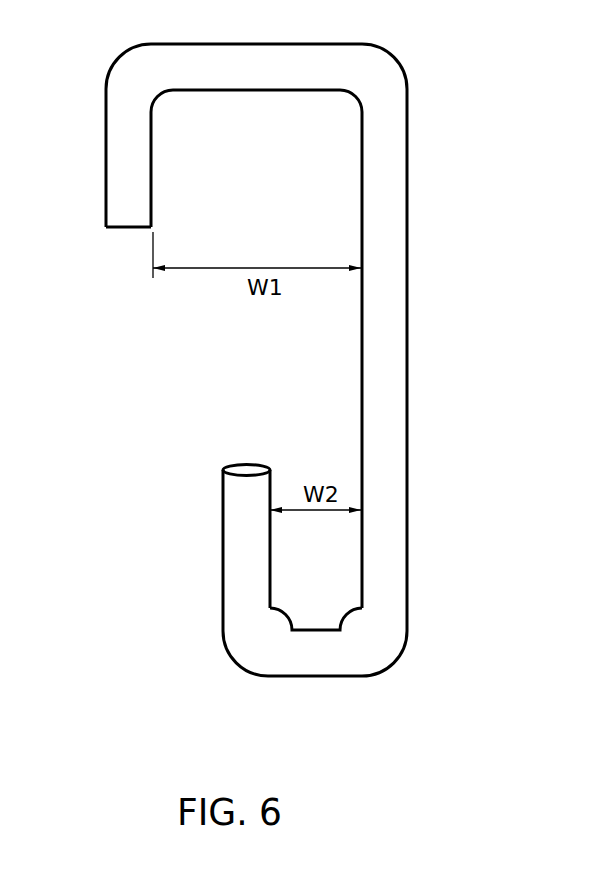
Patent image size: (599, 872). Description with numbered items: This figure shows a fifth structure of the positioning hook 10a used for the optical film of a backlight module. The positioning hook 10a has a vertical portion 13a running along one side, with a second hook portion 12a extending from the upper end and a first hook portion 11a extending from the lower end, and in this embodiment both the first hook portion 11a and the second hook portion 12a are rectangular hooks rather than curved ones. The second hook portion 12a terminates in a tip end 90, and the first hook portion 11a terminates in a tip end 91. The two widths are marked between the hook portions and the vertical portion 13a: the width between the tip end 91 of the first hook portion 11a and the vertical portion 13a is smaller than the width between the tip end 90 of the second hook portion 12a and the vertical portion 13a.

The positioning hook 10a is at (290, 340).
The first hook portion 11a is at (206, 519).
The second hook portion 12a is at (106, 184).
The vertical portion 13a is at (408, 355).
The tip end of the second hook portion 90 is at (125, 228).
The tip end of the first hook portion 91 is at (240, 468).